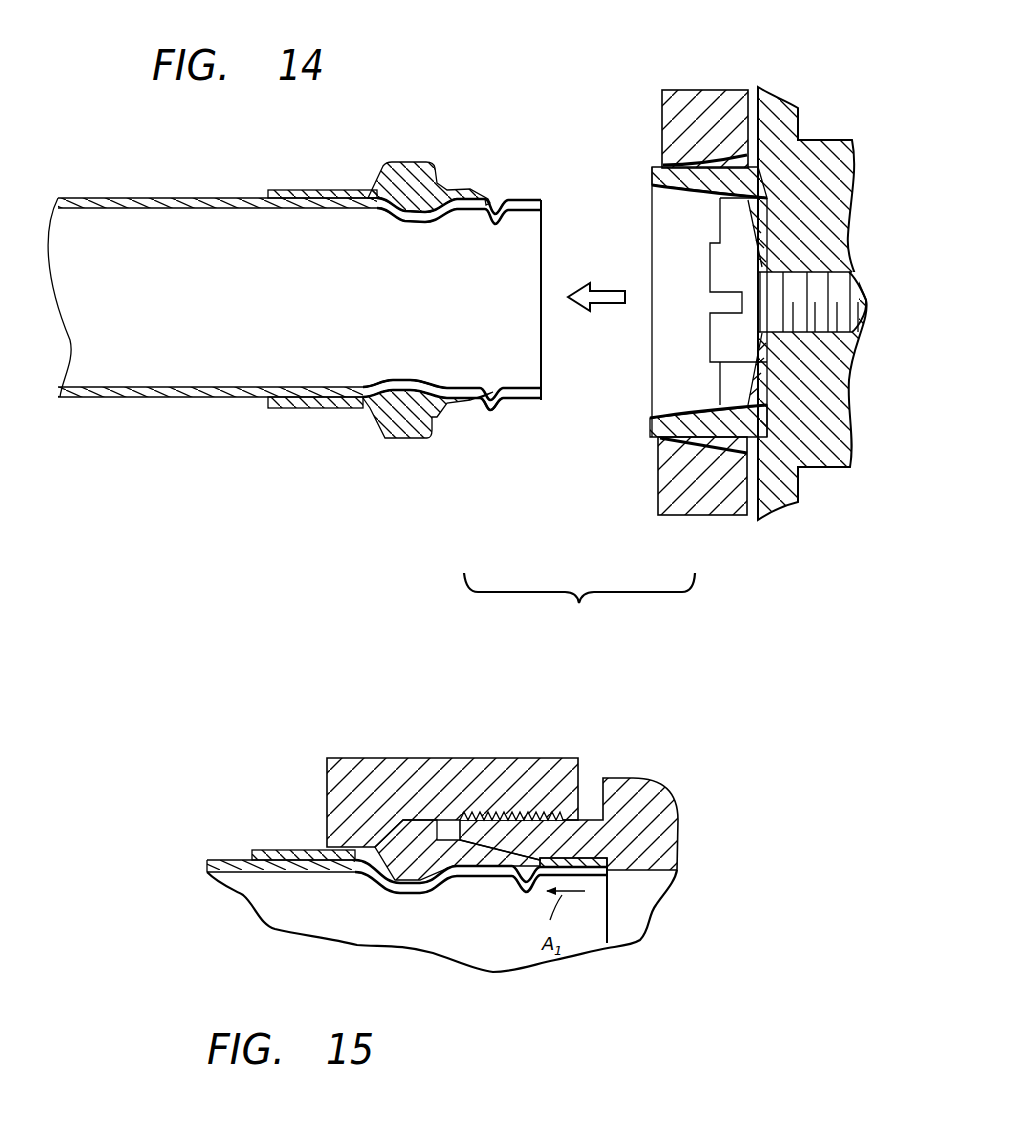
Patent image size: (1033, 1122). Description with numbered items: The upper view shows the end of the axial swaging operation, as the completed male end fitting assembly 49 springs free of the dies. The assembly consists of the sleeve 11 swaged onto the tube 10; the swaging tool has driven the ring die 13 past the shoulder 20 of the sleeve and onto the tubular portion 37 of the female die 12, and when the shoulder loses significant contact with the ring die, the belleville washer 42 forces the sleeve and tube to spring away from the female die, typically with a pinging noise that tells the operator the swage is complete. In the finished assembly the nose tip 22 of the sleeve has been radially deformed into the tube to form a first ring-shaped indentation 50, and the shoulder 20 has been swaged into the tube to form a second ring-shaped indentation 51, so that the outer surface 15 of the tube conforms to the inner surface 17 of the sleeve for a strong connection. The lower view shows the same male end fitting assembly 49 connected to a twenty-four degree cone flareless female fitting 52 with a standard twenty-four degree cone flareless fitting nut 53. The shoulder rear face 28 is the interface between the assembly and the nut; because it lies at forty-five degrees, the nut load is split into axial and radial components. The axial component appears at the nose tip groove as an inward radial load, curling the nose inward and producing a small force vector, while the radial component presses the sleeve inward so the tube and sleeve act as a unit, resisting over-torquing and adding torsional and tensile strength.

In FIG. 14, the tube 10 is at (136, 190).
In FIG. 14, the sleeve 11 is at (320, 412).
In FIG. 14, the female die 12 is at (822, 134).
In FIG. 14, the ring die 13 is at (700, 86).
In FIG. 14, the outer surface of the tube 15 is at (310, 192).
In FIG. 14, the inner surface of the sleeve 17 is at (338, 210).
In FIG. 14, the shoulder 20 is at (400, 180).
In FIG. 14, the nose tip 22 is at (492, 202).
In FIG. 15, the shoulder rear face 28 is at (393, 837).
In FIG. 14, the tubular portion 37 is at (672, 200).
In FIG. 14, the belleville washer 42 is at (747, 387).
In FIG. 14, the male end fitting assembly 49 is at (478, 156).
In FIG. 15, the male end fitting assembly 49 is at (497, 942).
In FIG. 14, the first ring-shaped indentation 50 is at (490, 385).
In FIG. 14, the second ring-shaped indentation 51 is at (407, 379).
In FIG. 15, the 24° cone flareless female fitting 52 is at (670, 774).
In FIG. 15, the 24° cone flareless fitting nut 53 is at (440, 754).